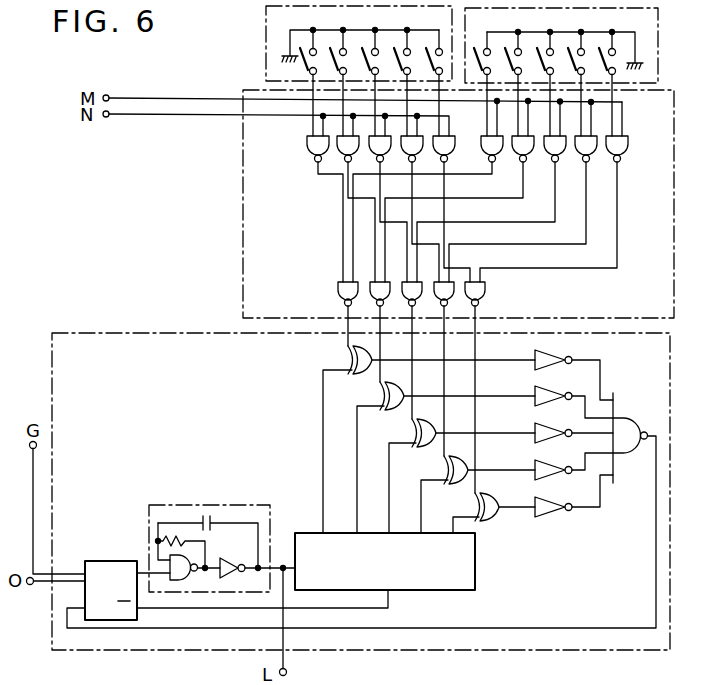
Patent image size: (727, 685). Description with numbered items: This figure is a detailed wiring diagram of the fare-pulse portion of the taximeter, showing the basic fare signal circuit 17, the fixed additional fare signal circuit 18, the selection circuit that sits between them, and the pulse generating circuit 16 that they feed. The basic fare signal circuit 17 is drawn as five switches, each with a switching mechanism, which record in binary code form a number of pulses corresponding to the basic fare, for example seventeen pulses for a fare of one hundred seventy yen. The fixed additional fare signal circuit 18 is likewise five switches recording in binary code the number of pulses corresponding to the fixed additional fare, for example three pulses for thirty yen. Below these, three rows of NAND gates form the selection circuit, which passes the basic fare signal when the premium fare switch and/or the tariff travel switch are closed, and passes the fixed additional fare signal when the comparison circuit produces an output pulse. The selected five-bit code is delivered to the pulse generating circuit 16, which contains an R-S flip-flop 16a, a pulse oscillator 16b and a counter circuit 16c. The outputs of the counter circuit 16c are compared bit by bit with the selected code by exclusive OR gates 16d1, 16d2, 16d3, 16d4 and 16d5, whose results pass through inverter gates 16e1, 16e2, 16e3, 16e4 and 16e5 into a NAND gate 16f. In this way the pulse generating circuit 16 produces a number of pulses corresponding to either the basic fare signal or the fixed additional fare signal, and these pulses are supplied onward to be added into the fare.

The basic fare signal circuit 17 is at (266, 57).
The fixed additional fare signal circuit 18 is at (660, 60).
The pulse generating circuit 16 is at (152, 331).
The R-S flip-flop 16a is at (112, 561).
The pulse oscillator 16b is at (225, 505).
The counter circuit 16c is at (475, 580).
The exclusive OR gate 16d1 is at (348, 357).
The exclusive OR gate 16d2 is at (380, 393).
The exclusive OR gate 16d3 is at (412, 430).
The exclusive OR gate 16d4 is at (444, 467).
The exclusive OR gate 16d5 is at (475, 504).
The inverter gate 16e1 is at (535, 369).
The inverter gate 16e2 is at (535, 405).
The inverter gate 16e3 is at (535, 442).
The inverter gate 16e4 is at (535, 480).
The inverter gate 16e5 is at (558, 515).
The NAND gate 16f is at (622, 455).